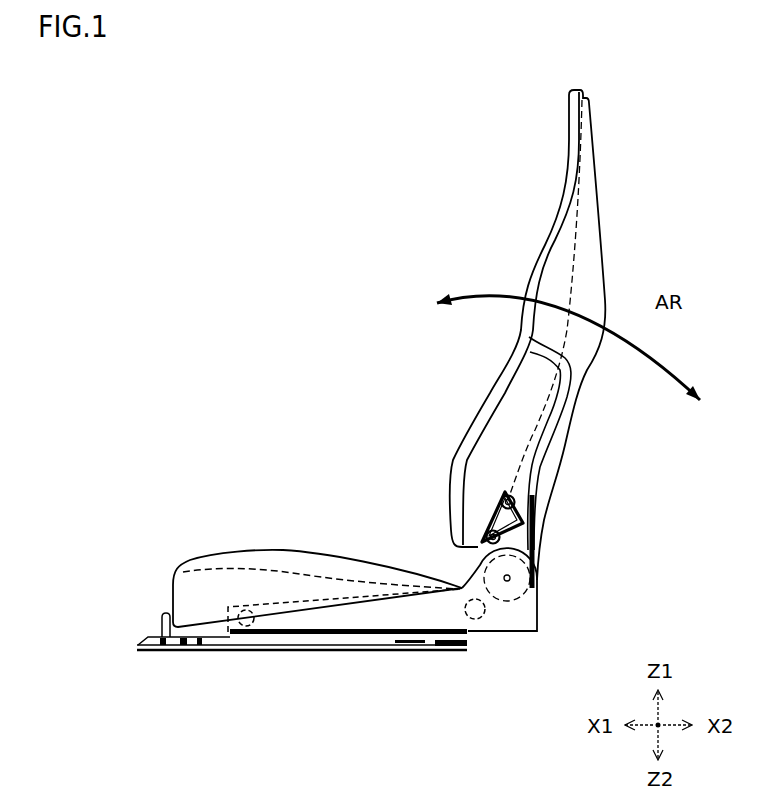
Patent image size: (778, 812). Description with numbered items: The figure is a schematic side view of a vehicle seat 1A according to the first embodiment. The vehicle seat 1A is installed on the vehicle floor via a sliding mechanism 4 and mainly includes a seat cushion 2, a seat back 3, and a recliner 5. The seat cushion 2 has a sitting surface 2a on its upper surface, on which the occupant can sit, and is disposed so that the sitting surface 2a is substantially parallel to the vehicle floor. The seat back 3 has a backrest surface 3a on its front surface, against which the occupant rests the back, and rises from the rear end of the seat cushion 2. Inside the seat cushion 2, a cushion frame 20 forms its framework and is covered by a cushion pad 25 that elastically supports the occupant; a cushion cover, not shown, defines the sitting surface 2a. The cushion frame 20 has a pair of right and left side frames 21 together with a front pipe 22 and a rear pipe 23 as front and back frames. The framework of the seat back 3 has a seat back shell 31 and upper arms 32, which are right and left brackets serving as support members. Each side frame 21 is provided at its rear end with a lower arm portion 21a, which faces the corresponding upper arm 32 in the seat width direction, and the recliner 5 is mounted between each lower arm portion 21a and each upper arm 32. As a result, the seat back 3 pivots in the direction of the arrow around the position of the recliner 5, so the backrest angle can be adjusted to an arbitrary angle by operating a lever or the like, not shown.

The vehicle seat 1A is at (140, 125).
The seat cushion 2 is at (192, 545).
The sitting surface 2a is at (348, 582).
The cushion pad 25 is at (288, 562).
The seat back 3 is at (545, 178).
The backrest surface 3a is at (540, 415).
The seat back shell 31 is at (593, 233).
The upper arms 32 is at (523, 540).
The recliner 5 is at (513, 587).
The lower arm portion 21a is at (535, 577).
The cushion frame 20 is at (362, 668).
The side frames 21 is at (386, 615).
The front pipe 22 is at (246, 627).
The rear pipe 23 is at (476, 620).
The sliding mechanism 4 is at (315, 642).